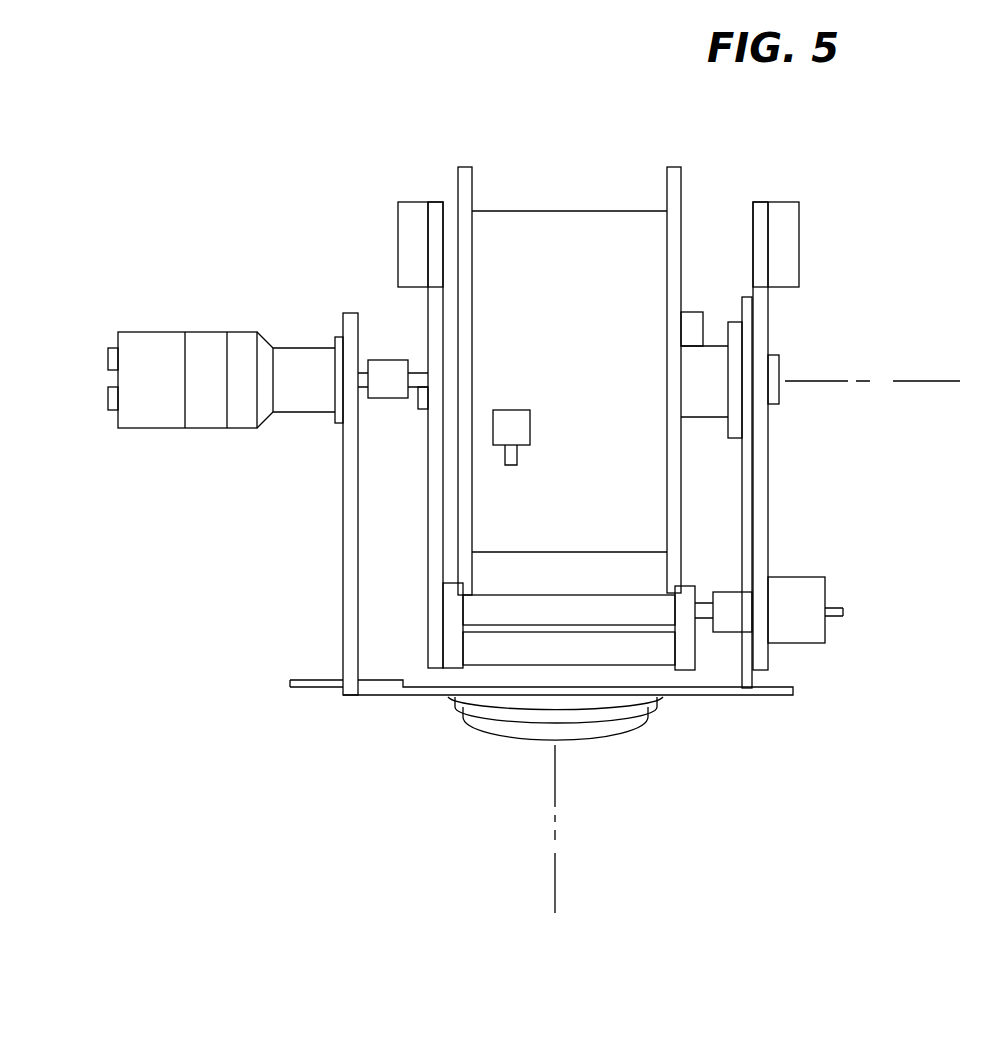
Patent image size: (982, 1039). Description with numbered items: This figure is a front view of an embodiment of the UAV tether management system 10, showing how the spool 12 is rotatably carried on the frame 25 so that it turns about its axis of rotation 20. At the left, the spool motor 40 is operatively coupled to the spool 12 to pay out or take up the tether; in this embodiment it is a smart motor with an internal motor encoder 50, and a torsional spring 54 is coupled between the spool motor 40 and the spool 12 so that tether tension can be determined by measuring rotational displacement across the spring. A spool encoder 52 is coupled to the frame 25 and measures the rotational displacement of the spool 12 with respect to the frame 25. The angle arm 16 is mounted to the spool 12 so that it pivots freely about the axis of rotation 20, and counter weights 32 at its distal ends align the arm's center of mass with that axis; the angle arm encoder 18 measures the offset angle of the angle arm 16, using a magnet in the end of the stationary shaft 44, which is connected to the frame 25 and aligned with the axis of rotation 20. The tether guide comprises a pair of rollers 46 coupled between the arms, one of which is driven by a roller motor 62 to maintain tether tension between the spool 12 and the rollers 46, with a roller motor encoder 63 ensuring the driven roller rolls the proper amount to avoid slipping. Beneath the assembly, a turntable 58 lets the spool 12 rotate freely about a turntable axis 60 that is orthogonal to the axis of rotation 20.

The UAV tether management system 10 is at (247, 183).
The spool 12 is at (672, 166).
The angle arm 16 is at (768, 522).
The angle arm encoder 18 is at (780, 359).
The axis of rotation 20 is at (877, 383).
The frame 25 is at (740, 437).
The counter weight 32 is at (402, 208).
The spool motor 40 is at (165, 426).
The stationary shaft 44 is at (414, 409).
The rollers 46 is at (608, 613).
The internal motor encoder 50 is at (110, 368).
The spool encoder 52 is at (692, 331).
The torsional spring 54 is at (390, 360).
The turntable 58 is at (483, 732).
The turntable axis 60 is at (556, 838).
The roller motor 62 is at (826, 641).
The roller motor encoder 63 is at (826, 589).